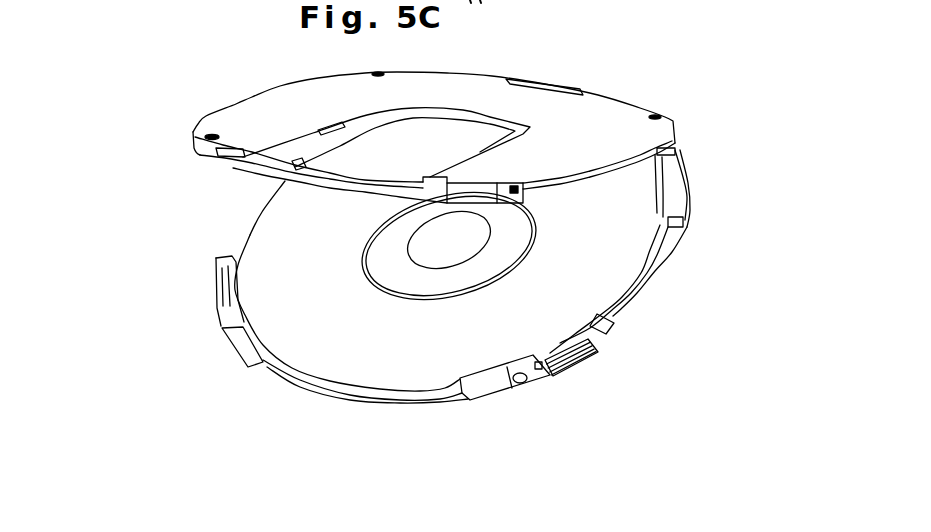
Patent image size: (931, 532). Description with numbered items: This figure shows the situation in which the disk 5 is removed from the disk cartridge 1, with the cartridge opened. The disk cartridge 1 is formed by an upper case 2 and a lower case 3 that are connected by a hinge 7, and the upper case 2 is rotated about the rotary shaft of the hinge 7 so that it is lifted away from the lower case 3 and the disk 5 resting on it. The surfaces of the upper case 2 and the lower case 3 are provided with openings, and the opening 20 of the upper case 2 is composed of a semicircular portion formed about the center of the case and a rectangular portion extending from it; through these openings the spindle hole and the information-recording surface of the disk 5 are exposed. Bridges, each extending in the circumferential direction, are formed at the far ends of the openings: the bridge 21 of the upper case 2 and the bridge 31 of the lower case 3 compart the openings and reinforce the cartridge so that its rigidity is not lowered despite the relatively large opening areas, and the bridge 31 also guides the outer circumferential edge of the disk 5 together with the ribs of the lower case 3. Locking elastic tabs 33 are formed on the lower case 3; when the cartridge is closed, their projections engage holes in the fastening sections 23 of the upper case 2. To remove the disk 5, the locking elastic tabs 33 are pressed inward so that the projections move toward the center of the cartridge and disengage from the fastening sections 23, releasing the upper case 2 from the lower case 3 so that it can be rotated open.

The disk cartridge 1 is at (714, 92).
The upper case 2 is at (676, 122).
The lower case 3 is at (670, 220).
The disk 5 is at (583, 277).
The hinge 7 is at (563, 83).
The opening 20 is at (235, 160).
The bridge 21 is at (264, 177).
The fastening section 23 is at (525, 188).
The bridge 31 is at (290, 375).
The locking elastic tab 33 is at (583, 357).